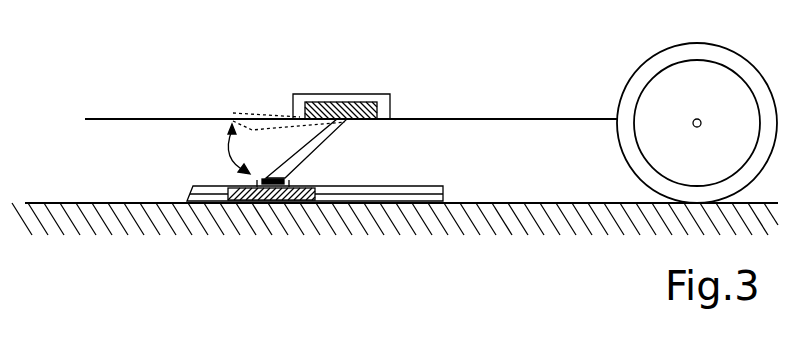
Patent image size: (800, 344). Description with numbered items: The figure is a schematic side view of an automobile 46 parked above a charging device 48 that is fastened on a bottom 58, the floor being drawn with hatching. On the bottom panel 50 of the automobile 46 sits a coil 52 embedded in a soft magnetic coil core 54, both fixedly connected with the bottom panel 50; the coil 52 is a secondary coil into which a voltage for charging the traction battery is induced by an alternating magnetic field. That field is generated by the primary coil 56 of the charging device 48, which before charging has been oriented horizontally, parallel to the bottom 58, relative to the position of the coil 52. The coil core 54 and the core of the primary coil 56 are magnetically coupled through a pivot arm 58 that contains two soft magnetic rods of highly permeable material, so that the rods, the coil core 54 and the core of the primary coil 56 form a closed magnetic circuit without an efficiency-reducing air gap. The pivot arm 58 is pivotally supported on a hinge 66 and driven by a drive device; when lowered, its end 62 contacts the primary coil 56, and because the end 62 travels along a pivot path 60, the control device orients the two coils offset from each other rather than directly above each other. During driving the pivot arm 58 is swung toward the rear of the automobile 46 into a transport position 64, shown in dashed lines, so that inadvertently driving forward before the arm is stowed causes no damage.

The automobile 46 is at (118, 118).
The charging device 48 is at (425, 186).
The bottom panel 50 is at (548, 121).
The coil 52 is at (353, 108).
The coil core 54 is at (310, 95).
The primary coil 56 is at (268, 202).
The pivot arm 58 is at (65, 203).
The pivot path 60 is at (230, 153).
The end 62 is at (290, 177).
The transport position 64 is at (282, 118).
The hinge 66 is at (345, 124).